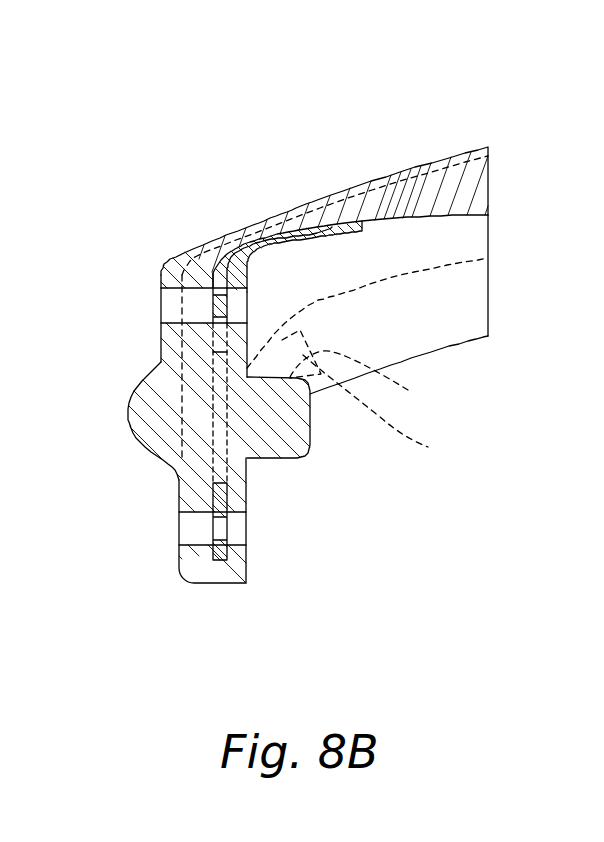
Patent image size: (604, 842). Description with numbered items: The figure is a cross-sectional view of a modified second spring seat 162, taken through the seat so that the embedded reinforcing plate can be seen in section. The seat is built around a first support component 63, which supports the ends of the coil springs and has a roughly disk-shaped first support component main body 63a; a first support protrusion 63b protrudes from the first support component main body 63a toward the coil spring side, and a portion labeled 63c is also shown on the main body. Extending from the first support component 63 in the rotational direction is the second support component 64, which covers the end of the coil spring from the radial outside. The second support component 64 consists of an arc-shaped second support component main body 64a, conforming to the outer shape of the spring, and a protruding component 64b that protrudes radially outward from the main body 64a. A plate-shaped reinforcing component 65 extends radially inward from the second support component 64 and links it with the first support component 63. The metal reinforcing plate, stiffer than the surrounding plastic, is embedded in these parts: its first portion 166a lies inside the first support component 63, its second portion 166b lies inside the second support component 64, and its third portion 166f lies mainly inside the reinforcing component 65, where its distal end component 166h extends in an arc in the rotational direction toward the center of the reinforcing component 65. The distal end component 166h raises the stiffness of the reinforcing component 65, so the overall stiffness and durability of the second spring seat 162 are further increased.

The second spring seat 162 is at (255, 195).
The second support component 64 is at (377, 163).
The second support component main body 64a is at (417, 192).
The protruding component 64b is at (456, 162).
The reinforcing component 65 is at (462, 306).
The second portion 166b is at (320, 230).
The first support component 63 is at (166, 478).
The first support component main body 63a is at (160, 352).
The left bulge 63c is at (152, 432).
The first support protrusion 63b is at (297, 433).
The first portion 166a is at (225, 492).
The distal end component 166h is at (378, 367).
The third portion 166f is at (395, 409).